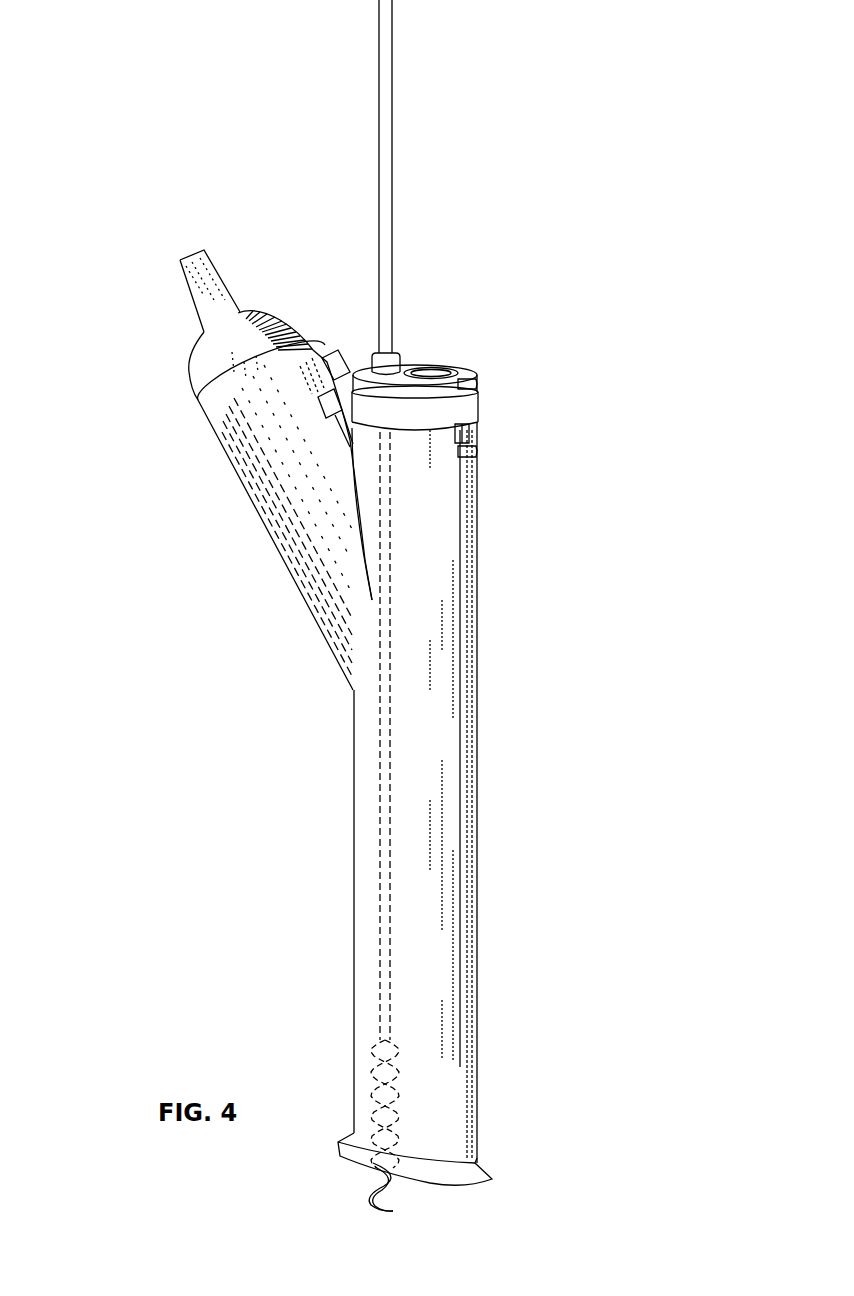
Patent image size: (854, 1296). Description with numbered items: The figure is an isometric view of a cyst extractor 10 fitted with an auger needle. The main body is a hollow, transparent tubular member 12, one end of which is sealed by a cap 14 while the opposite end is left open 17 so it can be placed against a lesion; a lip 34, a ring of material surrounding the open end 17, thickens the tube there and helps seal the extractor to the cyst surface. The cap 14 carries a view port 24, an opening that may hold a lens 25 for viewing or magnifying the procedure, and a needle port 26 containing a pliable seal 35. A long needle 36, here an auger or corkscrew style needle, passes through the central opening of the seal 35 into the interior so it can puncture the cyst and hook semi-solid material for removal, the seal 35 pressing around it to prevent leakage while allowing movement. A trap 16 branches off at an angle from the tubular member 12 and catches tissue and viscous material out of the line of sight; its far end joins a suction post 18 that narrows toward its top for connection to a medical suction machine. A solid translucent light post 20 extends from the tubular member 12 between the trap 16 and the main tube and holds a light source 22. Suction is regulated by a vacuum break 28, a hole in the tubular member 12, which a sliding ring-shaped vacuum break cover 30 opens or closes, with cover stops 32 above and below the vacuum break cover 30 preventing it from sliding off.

The cyst extractor 10 is at (110, 152).
The tubular member 12 is at (468, 604).
The cap 14 is at (478, 370).
The trap 16 is at (217, 424).
The open end 17 is at (428, 1186).
The suction post 18 is at (193, 273).
The light post 20 is at (330, 399).
The light source 22 is at (343, 351).
The view port 24 is at (460, 366).
The lens 25 is at (432, 368).
The needle port 26 is at (398, 362).
The vacuum break 28 is at (477, 443).
The vacuum break cover 30 is at (463, 408).
The cover stop 32 is at (477, 386).
The lip 34 is at (472, 1176).
The seal 35 is at (377, 352).
The needle 36 is at (388, 50).